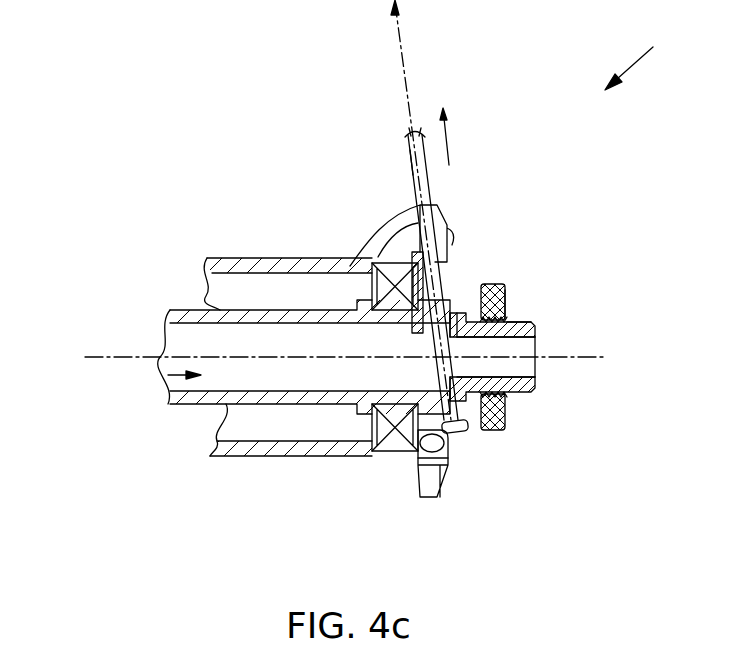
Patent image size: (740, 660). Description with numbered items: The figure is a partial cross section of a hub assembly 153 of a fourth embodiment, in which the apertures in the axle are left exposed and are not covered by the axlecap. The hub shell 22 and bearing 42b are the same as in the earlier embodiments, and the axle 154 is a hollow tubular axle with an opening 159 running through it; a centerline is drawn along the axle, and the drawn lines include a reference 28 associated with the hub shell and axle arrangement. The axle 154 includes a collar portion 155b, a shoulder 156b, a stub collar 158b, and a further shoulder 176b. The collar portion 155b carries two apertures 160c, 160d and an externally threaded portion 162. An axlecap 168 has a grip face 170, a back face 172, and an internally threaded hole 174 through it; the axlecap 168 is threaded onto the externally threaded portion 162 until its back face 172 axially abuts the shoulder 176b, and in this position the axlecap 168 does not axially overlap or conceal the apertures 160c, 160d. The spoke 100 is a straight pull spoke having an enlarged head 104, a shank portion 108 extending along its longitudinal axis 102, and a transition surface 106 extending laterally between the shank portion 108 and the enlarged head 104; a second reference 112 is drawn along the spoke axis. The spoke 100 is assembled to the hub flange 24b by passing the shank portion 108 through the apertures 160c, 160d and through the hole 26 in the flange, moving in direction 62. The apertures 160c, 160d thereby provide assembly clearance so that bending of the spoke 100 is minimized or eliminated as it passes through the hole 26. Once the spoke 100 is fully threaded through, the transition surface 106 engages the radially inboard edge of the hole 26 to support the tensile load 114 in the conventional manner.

The hub shell 22 is at (255, 257).
The drive shaft axis 28 is at (100, 356).
The axle 154 is at (195, 405).
The opening 159 is at (168, 375).
The shoulder 156b is at (402, 248).
The collar portion 155b is at (375, 452).
The hole 26 is at (417, 201).
The hub flange 24b is at (413, 497).
The bearing 42b is at (414, 466).
The longitudinal axis 102 is at (412, 105).
The pin axis 112 is at (407, 82).
The tensile load 114 is at (398, 33).
The spoke 100 is at (408, 148).
The shank portion 108 is at (410, 175).
The enlarged head 104 is at (466, 414).
The direction 62 is at (449, 146).
The hub assembly 153 is at (649, 57).
The internally threaded hole 174 is at (538, 346).
The back face 172 is at (472, 313).
The aperture 160c is at (455, 322).
The aperture 160d is at (457, 373).
The axlecap 168 is at (505, 285).
The grip face 170 is at (508, 296).
The externally threaded portion 162 is at (512, 315).
The stub collar 158b is at (530, 323).
The transition surface 106 is at (505, 410).
The shoulder 176b is at (505, 397).